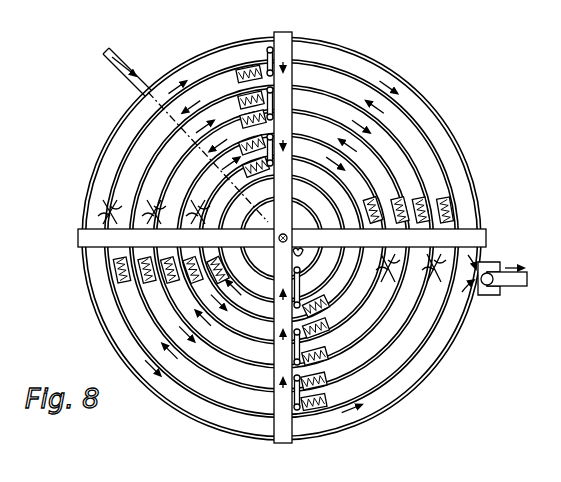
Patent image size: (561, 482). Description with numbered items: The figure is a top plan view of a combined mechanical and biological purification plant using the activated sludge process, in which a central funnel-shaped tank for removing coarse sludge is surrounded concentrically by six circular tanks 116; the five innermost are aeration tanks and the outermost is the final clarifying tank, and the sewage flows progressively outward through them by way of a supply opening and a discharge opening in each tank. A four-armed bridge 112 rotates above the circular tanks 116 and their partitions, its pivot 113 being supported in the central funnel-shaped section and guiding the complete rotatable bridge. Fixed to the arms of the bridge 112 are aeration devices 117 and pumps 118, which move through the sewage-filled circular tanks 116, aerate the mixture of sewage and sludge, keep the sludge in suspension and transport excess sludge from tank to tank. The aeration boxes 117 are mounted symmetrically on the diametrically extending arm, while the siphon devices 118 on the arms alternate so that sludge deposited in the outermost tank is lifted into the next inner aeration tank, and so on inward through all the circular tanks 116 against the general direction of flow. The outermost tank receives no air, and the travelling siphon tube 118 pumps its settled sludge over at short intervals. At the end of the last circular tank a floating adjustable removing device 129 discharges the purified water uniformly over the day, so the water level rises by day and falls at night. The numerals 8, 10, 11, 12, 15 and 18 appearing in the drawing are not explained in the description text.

The inlet pipe 8 is at (146, 90).
The concentric channel walls 10 is at (302, 172).
The outer casing wall 11 is at (451, 116).
The cross partition bars 12 is at (291, 34).
The central shaft 15 is at (272, 227).
The passage openings 18 is at (289, 222).
The four-armed bridge 112 is at (256, 98).
The pivot 113 is at (282, 255).
The circular tanks 116 is at (446, 362).
The aeration devices 117 is at (448, 206).
The siphon conveyor devices 118 is at (266, 55).
The floating adjustable removing device 129 is at (494, 290).